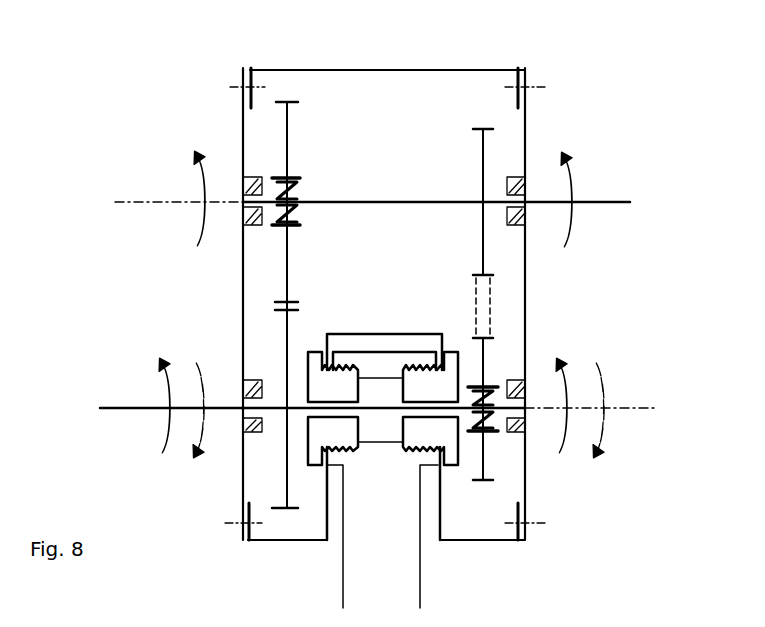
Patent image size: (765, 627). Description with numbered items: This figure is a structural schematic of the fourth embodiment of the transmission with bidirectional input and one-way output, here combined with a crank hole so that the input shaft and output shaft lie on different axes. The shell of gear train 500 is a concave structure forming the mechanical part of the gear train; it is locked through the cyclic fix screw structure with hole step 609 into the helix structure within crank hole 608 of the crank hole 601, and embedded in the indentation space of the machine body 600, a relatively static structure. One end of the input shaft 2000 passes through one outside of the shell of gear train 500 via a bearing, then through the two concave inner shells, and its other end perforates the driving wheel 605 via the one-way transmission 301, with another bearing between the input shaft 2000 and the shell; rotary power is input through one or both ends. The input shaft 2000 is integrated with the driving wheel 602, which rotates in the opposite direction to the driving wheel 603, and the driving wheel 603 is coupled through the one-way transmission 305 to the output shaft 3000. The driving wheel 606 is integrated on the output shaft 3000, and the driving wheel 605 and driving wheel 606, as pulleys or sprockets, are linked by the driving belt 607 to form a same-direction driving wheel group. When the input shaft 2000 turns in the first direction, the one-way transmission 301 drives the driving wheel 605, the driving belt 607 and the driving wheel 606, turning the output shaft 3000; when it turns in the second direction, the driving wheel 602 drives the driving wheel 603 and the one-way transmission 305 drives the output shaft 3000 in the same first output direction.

The shell of gear train 500 is at (415, 70).
The output shaft 3000 is at (168, 203).
The input shaft 2000 is at (118, 408).
The driving wheel 603 is at (288, 128).
The one-way transmission 305 is at (302, 187).
The driving wheel 602 is at (288, 327).
The driving wheel 606 is at (482, 170).
The driving belt 607 is at (473, 290).
The one-way transmission 301 is at (505, 423).
The driving wheel 605 is at (477, 481).
The cyclic fix screw structure with hole step 609 is at (398, 390).
The helix structure within crank hole 608 is at (347, 375).
The crank hole 601 is at (378, 428).
The machine body 600 is at (407, 580).